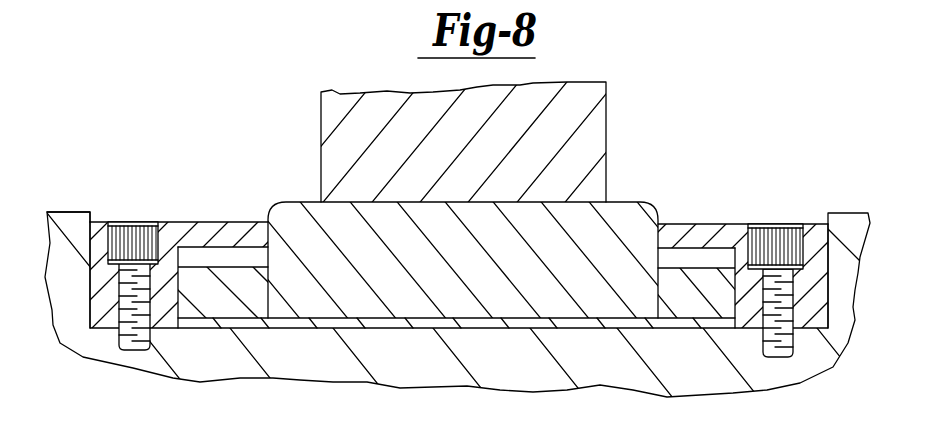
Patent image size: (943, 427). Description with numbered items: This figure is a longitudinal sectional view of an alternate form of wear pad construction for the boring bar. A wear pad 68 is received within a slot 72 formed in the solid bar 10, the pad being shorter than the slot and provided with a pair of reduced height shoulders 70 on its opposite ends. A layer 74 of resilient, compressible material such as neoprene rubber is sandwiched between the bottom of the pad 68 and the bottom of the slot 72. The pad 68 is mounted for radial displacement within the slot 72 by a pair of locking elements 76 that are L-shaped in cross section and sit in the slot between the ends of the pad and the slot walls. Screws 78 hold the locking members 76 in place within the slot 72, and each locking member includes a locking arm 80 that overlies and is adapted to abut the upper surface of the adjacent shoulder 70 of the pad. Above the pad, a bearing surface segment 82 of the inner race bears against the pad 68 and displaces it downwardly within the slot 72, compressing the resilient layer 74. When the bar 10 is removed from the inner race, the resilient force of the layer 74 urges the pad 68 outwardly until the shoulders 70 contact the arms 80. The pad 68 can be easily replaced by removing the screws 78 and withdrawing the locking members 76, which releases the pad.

The bar 10 is at (344, 362).
The wear pad 68 is at (434, 278).
The reduced height shoulders 70 is at (225, 303).
The slot 72 is at (106, 209).
The layer of resilient, compressible material 74 is at (438, 322).
The locking elements 76 is at (105, 320).
The screws 78 is at (130, 240).
The locking arm 80 is at (208, 228).
The bearing surface segment 82 is at (594, 121).